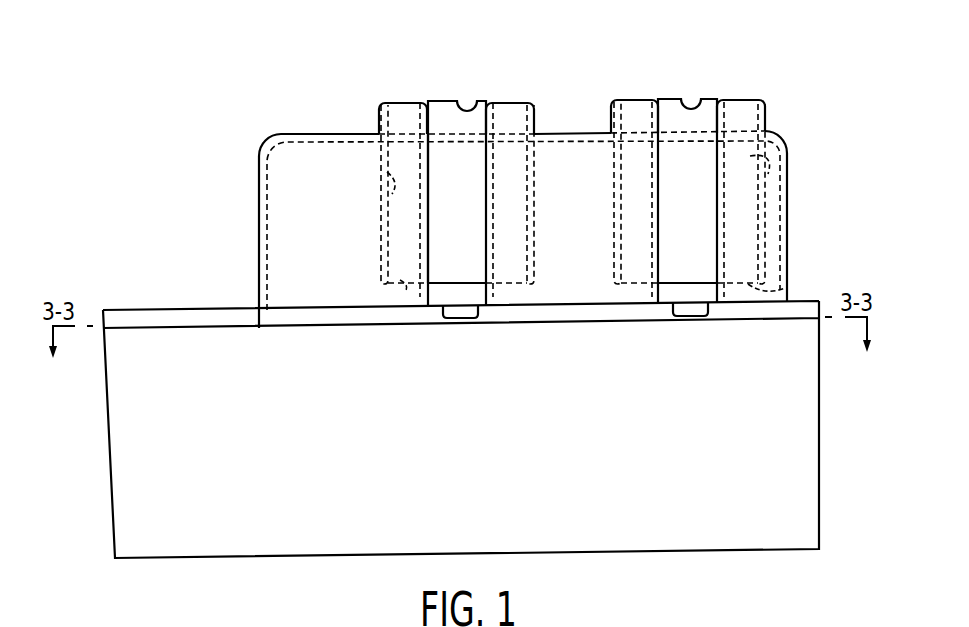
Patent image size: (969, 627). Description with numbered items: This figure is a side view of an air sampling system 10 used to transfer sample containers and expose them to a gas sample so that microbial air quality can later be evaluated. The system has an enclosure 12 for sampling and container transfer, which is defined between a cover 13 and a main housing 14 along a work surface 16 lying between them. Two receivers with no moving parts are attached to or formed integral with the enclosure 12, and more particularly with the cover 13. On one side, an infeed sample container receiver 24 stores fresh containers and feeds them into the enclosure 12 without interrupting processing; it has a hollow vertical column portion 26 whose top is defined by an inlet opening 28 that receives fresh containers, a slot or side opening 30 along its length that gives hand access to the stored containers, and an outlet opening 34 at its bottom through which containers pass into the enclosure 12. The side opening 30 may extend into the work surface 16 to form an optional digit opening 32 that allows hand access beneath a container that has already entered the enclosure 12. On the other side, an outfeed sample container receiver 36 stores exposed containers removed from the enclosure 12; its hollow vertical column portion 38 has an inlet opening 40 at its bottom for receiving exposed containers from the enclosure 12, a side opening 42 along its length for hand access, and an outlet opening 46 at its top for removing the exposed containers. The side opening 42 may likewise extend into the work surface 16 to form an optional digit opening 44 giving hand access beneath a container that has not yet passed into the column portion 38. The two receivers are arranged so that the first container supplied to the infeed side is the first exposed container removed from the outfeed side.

The air sampling system 10 is at (790, 52).
The enclosure 12 is at (258, 140).
The cover 13 is at (258, 165).
The main housing 14 is at (107, 361).
The work surface 16 is at (312, 308).
The infeed sample container receiver 24 is at (380, 107).
The column portion 26 is at (387, 201).
The inlet opening 28 is at (477, 102).
The side opening 30 is at (429, 122).
The digit opening 32 is at (448, 312).
The outlet opening 34 is at (407, 284).
The outfeed sample container receiver 36 is at (766, 100).
The column portion 38 is at (788, 168).
The inlet opening 40 is at (788, 289).
The side opening 42 is at (717, 210).
The digit opening 44 is at (698, 312).
The outlet opening 46 is at (702, 100).